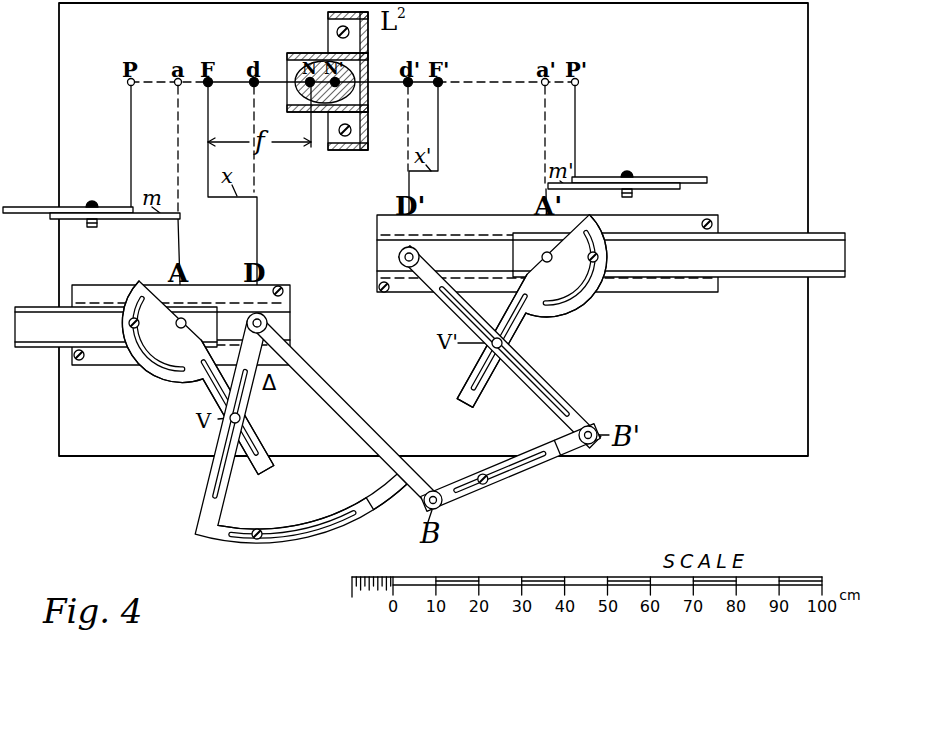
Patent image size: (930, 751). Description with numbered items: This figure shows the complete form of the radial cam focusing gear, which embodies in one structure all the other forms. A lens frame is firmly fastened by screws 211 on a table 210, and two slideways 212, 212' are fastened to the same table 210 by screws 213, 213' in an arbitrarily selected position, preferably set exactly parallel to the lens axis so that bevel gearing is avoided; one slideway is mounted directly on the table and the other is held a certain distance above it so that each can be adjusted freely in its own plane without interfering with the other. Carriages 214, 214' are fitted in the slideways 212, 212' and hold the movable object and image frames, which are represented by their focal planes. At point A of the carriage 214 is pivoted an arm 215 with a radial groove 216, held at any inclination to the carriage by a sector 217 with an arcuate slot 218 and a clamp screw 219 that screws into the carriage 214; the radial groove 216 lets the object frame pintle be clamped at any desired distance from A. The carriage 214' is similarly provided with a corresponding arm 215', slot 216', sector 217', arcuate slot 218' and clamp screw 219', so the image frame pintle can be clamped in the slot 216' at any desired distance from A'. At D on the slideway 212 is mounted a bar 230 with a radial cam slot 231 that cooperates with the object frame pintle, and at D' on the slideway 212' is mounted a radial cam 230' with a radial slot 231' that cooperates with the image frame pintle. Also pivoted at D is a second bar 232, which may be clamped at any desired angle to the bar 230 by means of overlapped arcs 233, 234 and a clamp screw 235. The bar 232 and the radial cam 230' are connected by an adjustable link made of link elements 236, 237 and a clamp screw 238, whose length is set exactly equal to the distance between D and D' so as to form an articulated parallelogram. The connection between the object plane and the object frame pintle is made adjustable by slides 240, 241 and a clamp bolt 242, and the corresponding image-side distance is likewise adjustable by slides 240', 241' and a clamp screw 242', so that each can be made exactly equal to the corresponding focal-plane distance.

The table 210 is at (790, 97).
The screws 211 is at (329, 31).
The slideway 212 is at (181, 344).
The screws 213 is at (177, 333).
The carriage 214 is at (111, 310).
The arm 215 is at (215, 407).
The radial groove 216 is at (257, 407).
The sector 217 is at (189, 365).
The arcuate slot 218 is at (156, 358).
The clamp screw 219 is at (126, 334).
The bar 230 is at (281, 432).
The radial cam slot 231 is at (195, 434).
The second bar 232 is at (372, 437).
The overlapped arc 233 is at (231, 541).
The overlapped arc 234 is at (380, 505).
The clamp screw 235 is at (260, 531).
The link element 236 is at (572, 452).
The link element 237 is at (452, 494).
The clamp screw 238 is at (482, 476).
The slide 240 is at (68, 192).
The slide 241 is at (115, 234).
The clamp bolt 242 is at (103, 195).
The slideway 212' is at (547, 274).
The screws 213' is at (573, 265).
The carriage 214' is at (690, 269).
The arm 215' is at (468, 340).
The slot 216' is at (505, 357).
The sector 217' is at (532, 311).
The arcuate slot 218' is at (587, 284).
The clamp screw 219' is at (609, 268).
The radial cam 230' is at (527, 347).
The radial slot 231' is at (504, 368).
The slide 240' is at (656, 163).
The slide 241' is at (642, 199).
The clamp screw 242' is at (643, 169).